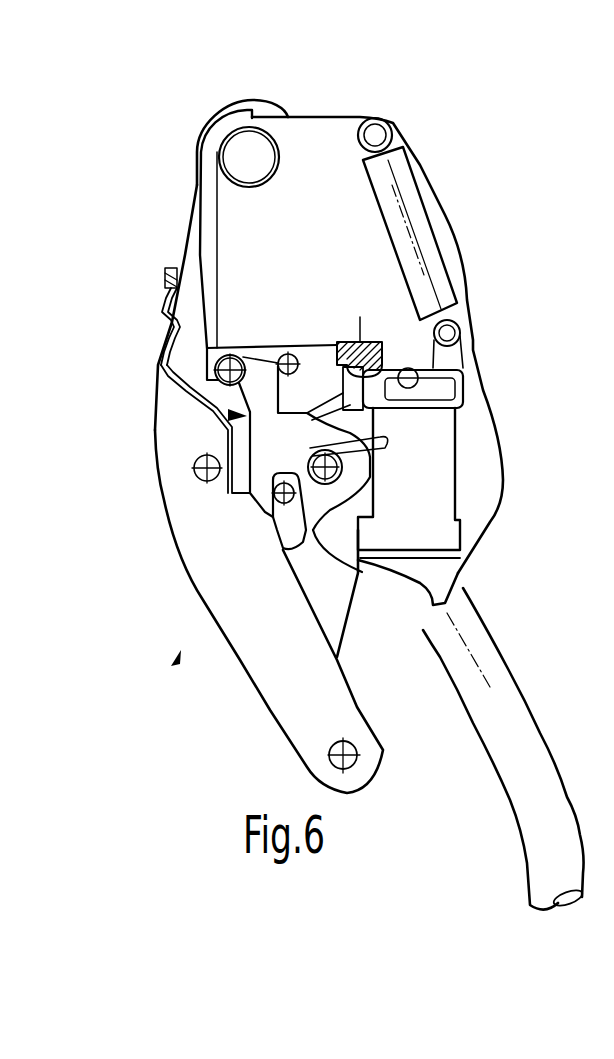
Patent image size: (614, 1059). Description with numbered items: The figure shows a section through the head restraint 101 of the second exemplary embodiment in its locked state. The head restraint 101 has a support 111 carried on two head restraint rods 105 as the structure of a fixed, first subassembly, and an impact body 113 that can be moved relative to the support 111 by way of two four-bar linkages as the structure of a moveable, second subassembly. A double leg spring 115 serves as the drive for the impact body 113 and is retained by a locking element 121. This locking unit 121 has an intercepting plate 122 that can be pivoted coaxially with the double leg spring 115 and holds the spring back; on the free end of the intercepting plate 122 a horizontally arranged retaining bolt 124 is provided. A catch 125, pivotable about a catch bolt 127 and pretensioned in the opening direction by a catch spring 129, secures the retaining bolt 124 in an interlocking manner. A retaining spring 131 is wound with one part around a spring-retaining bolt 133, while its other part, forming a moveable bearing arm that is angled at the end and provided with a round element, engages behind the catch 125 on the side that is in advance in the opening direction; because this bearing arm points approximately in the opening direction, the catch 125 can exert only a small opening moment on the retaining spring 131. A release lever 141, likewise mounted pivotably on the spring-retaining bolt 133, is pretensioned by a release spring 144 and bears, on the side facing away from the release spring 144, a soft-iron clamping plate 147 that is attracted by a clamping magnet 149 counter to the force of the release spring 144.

The head restraint 101 is at (177, 660).
The head restraint rods 105 is at (533, 800).
The support 111 is at (473, 500).
The impact body 113 is at (223, 562).
The double leg spring 115 is at (200, 208).
The locking element 121 is at (228, 414).
The intercepting plate 122 is at (170, 310).
The retaining bolt 124 is at (270, 513).
The catch 125 is at (298, 445).
The catch bolt 127 is at (342, 470).
The catch spring 129 is at (405, 453).
The retaining spring 131 is at (275, 345).
The spring-retaining bolt 133 is at (172, 378).
The release lever 141 is at (316, 368).
The release spring 144 is at (410, 243).
The clamping plate 147 is at (462, 380).
The clamping magnet 149 is at (392, 430).